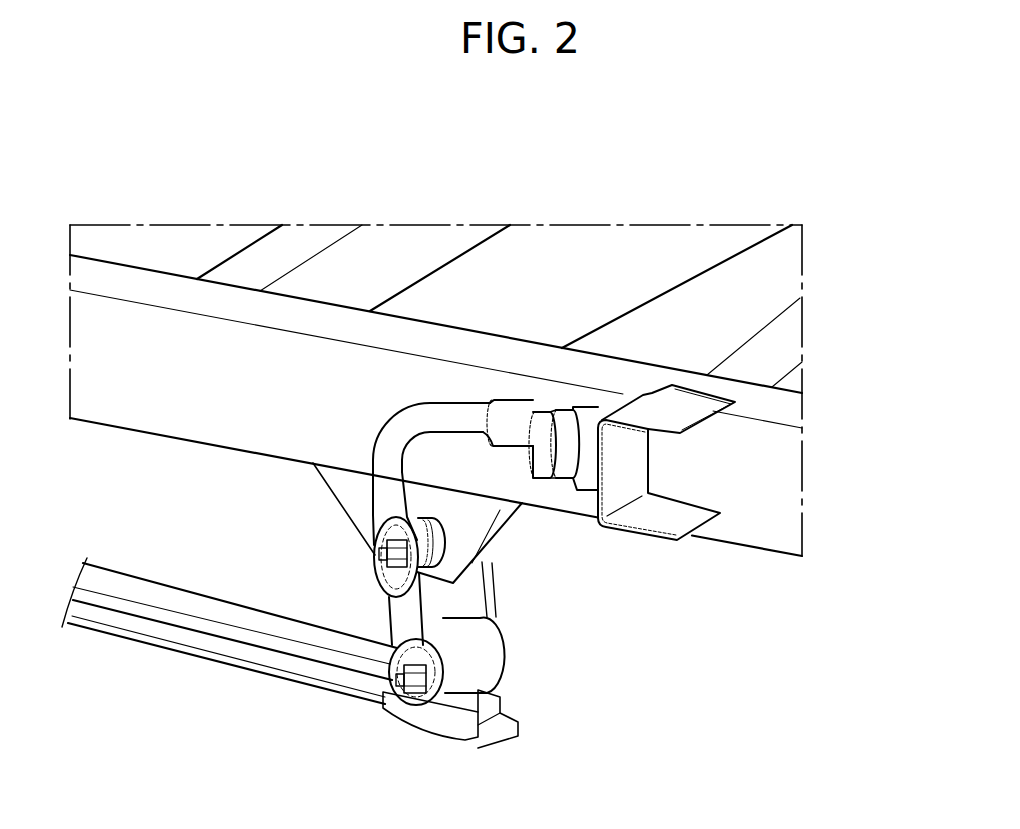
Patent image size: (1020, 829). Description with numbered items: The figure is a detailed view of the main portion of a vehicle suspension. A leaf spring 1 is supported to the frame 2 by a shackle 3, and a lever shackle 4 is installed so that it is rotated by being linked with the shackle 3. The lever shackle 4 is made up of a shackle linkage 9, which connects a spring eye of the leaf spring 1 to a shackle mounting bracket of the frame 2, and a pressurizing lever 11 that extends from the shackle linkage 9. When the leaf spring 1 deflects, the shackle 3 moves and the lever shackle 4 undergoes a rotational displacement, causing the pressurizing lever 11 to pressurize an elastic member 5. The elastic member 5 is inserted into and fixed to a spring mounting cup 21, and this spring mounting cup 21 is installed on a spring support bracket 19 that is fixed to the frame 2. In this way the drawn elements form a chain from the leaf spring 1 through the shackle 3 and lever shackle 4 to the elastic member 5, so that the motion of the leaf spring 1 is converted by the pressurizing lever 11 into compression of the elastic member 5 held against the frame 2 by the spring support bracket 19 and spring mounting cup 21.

The leaf spring 1 is at (142, 595).
The frame 2 is at (182, 340).
The shackle 3 is at (485, 598).
The lever shackle 4 is at (387, 487).
The elastic member 5 is at (552, 425).
The shackle linkage 9 is at (397, 613).
The pressurizing lever 11 is at (444, 412).
The spring support bracket 19 is at (680, 518).
The spring mounting cup 21 is at (588, 455).